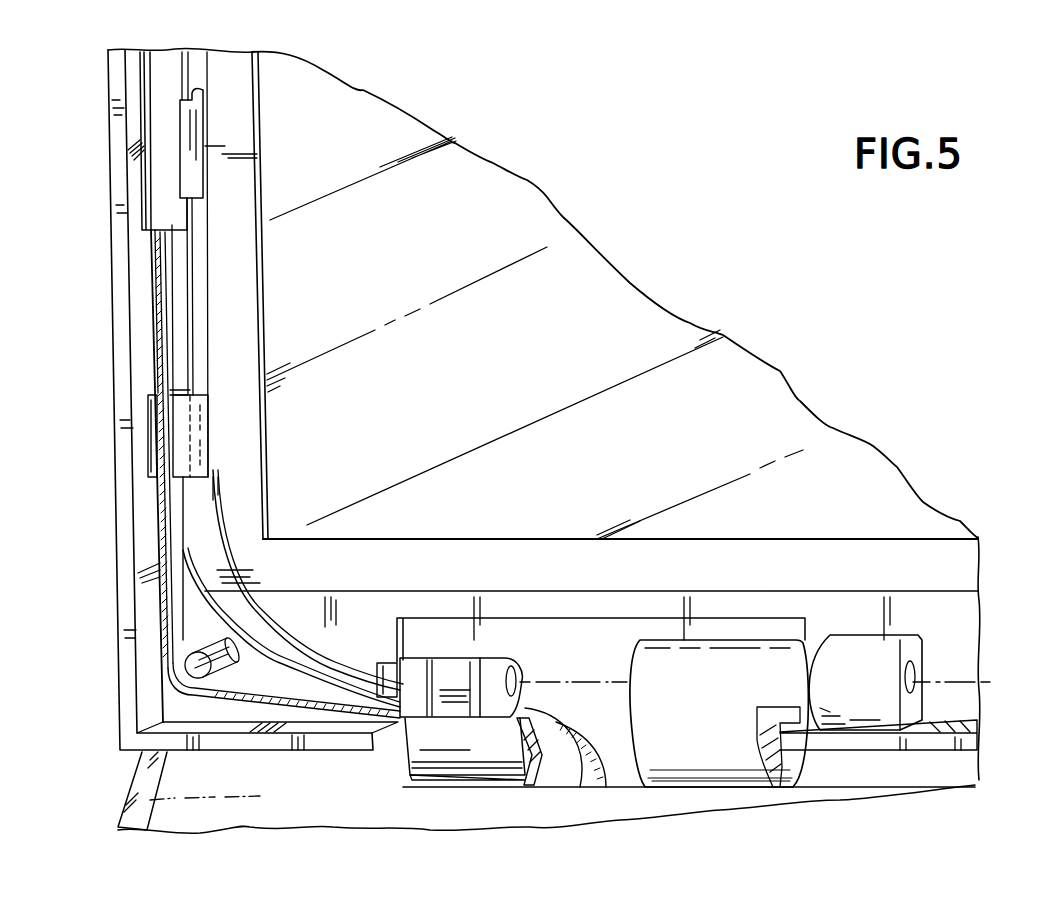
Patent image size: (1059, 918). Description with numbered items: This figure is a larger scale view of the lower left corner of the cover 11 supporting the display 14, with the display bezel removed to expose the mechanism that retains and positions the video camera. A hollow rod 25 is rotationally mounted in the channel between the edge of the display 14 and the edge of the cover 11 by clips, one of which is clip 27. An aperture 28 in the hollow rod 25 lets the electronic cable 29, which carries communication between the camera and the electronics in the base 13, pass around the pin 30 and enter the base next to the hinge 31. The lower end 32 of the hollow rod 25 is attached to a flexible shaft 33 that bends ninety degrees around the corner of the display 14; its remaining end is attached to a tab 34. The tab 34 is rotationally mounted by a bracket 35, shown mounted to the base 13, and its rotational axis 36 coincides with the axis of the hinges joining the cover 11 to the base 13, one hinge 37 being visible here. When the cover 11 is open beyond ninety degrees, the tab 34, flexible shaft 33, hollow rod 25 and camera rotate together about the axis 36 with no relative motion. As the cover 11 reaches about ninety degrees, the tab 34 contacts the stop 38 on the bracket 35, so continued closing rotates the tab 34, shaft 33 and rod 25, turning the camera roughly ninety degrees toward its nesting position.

The cover 11 is at (112, 70).
The base 13 is at (140, 777).
The display 14 is at (640, 265).
The hollow rod 25 is at (150, 124).
The clip 27 is at (190, 178).
The aperture 28 is at (187, 377).
The electronic cable 29 is at (165, 418).
The pin 30 is at (190, 667).
The hinge 31 is at (880, 648).
The lower end 32 is at (150, 478).
The flexible shaft 33 is at (203, 600).
The tab 34 is at (455, 665).
The bracket 35 is at (420, 745).
The rotational axis 36 is at (563, 682).
The hinge 37 is at (710, 762).
The stop 38 is at (472, 725).